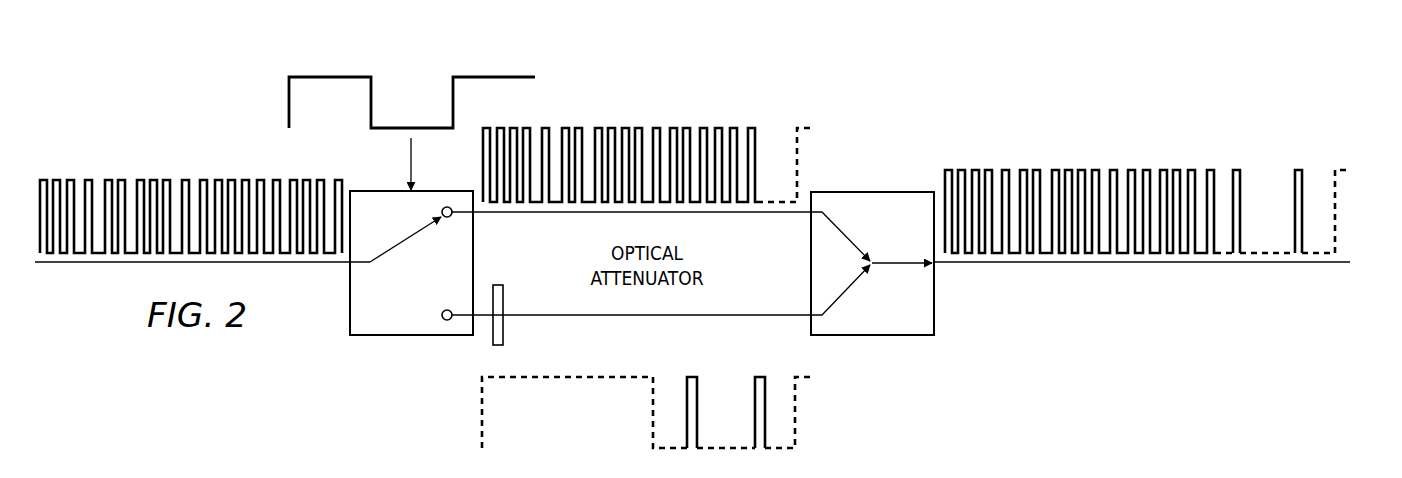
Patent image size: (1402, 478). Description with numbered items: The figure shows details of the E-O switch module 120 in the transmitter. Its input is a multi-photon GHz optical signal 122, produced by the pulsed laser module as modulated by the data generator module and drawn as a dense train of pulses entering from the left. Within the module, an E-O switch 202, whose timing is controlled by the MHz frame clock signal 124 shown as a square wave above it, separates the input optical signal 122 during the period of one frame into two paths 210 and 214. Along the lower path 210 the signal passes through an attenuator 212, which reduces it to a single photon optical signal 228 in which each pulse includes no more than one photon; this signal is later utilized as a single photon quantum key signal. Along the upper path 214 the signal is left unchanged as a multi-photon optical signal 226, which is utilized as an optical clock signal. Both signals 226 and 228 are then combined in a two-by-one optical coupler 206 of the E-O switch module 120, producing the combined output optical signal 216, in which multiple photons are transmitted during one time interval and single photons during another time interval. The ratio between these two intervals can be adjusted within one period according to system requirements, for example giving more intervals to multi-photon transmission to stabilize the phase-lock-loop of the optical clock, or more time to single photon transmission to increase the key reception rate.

The E-O switch module 120 is at (757, 100).
The input optical signal 122 is at (185, 180).
The MHz frame clock signal 124 is at (288, 110).
The E-O switch 202 is at (403, 337).
The 2*1 optical coupler 206 is at (875, 337).
The path 210 is at (663, 316).
The attenuator 212 is at (503, 330).
The path 214 is at (560, 213).
The combined output optical signal 216 is at (1147, 170).
The multi-photon optical signal 226 is at (609, 128).
The single photon optical signal 228 is at (457, 420).